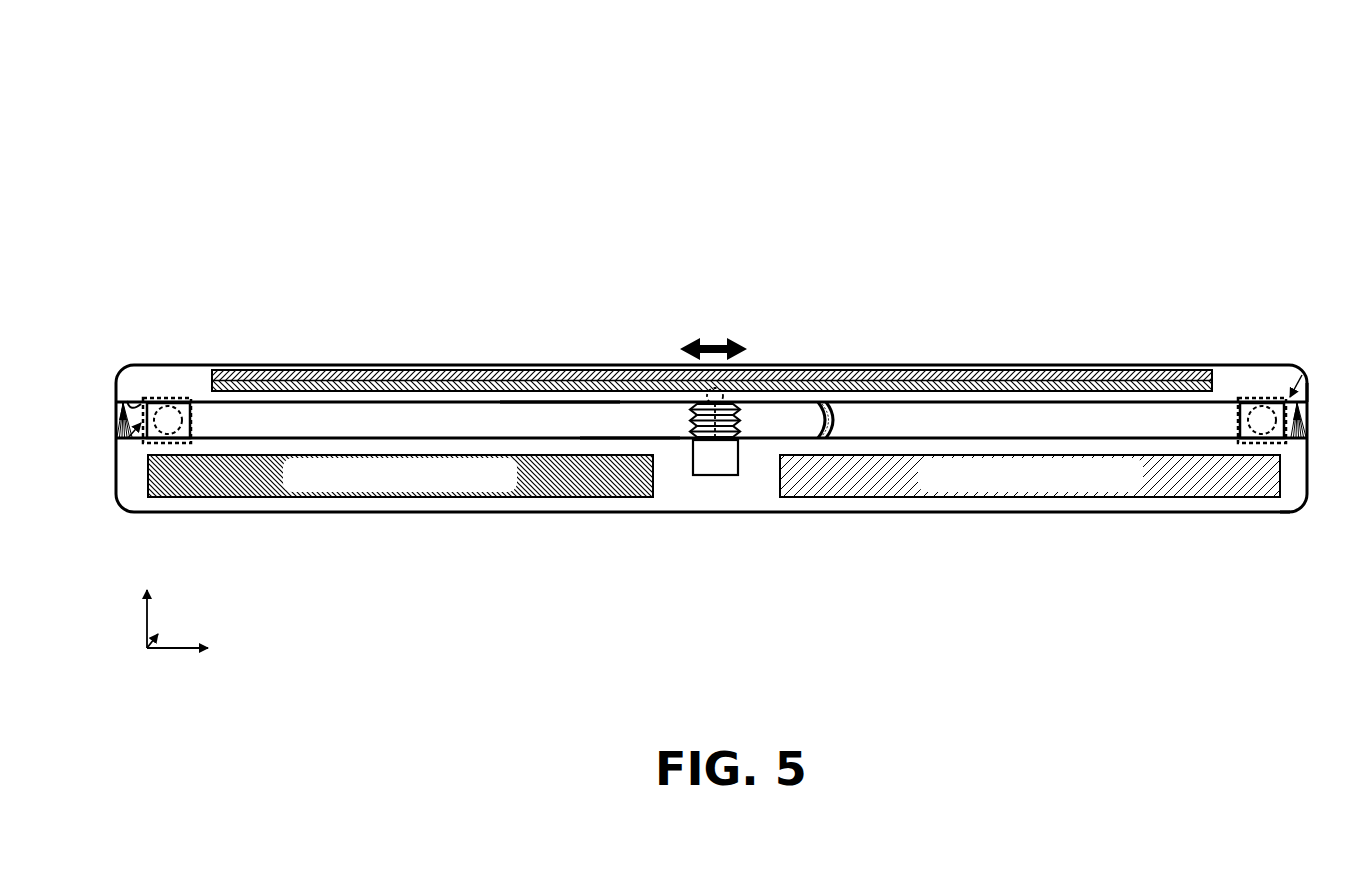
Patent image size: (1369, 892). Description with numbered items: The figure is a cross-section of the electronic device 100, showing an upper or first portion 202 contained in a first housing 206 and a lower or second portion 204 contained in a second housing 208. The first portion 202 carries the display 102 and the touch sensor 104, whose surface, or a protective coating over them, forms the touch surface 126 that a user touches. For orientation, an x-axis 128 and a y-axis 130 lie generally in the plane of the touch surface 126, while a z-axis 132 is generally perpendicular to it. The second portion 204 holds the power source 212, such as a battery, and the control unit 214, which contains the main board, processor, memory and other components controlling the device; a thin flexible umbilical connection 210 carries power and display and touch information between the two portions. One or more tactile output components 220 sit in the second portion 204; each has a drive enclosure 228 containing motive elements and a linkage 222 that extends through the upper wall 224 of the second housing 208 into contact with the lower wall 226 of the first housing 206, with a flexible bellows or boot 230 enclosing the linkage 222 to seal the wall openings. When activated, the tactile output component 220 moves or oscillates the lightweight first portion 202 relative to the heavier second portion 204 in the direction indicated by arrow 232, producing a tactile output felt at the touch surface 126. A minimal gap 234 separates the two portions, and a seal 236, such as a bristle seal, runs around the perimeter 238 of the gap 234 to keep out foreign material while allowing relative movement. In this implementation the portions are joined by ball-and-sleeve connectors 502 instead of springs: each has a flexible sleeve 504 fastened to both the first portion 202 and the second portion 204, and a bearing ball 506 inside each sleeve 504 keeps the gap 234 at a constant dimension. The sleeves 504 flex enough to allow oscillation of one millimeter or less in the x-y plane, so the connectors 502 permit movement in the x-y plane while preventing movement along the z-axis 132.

The electronic device 100 is at (150, 170).
The display 102 is at (1220, 368).
The touch sensor 104 is at (985, 387).
The touch surface 126 is at (887, 367).
The x-axis 128 is at (185, 650).
The y-axis 130 is at (147, 645).
The z-axis 132 is at (147, 618).
The first portion 202 is at (115, 362).
The second portion 204 is at (116, 512).
The first housing 206 is at (1302, 372).
The second housing 208 is at (1300, 505).
The flexible umbilical connection 210 is at (838, 420).
The power source 212 is at (400, 476).
The control unit 214 is at (1030, 476).
The tactile output component 220 is at (700, 486).
The linkage 222 is at (740, 418).
The upper wall 224 is at (628, 437).
The lower wall 226 is at (562, 404).
The drive enclosure 228 is at (735, 475).
The flexible bellows or boot 230 is at (690, 421).
The arrow 232 is at (716, 346).
The gap 234 is at (408, 419).
The seal 236 is at (118, 424).
The perimeter 238 is at (130, 400).
The ball-and-sleeve connector 502 is at (128, 438).
The flexible sleeve 504 is at (190, 418).
The bearing ball 506 is at (182, 398).